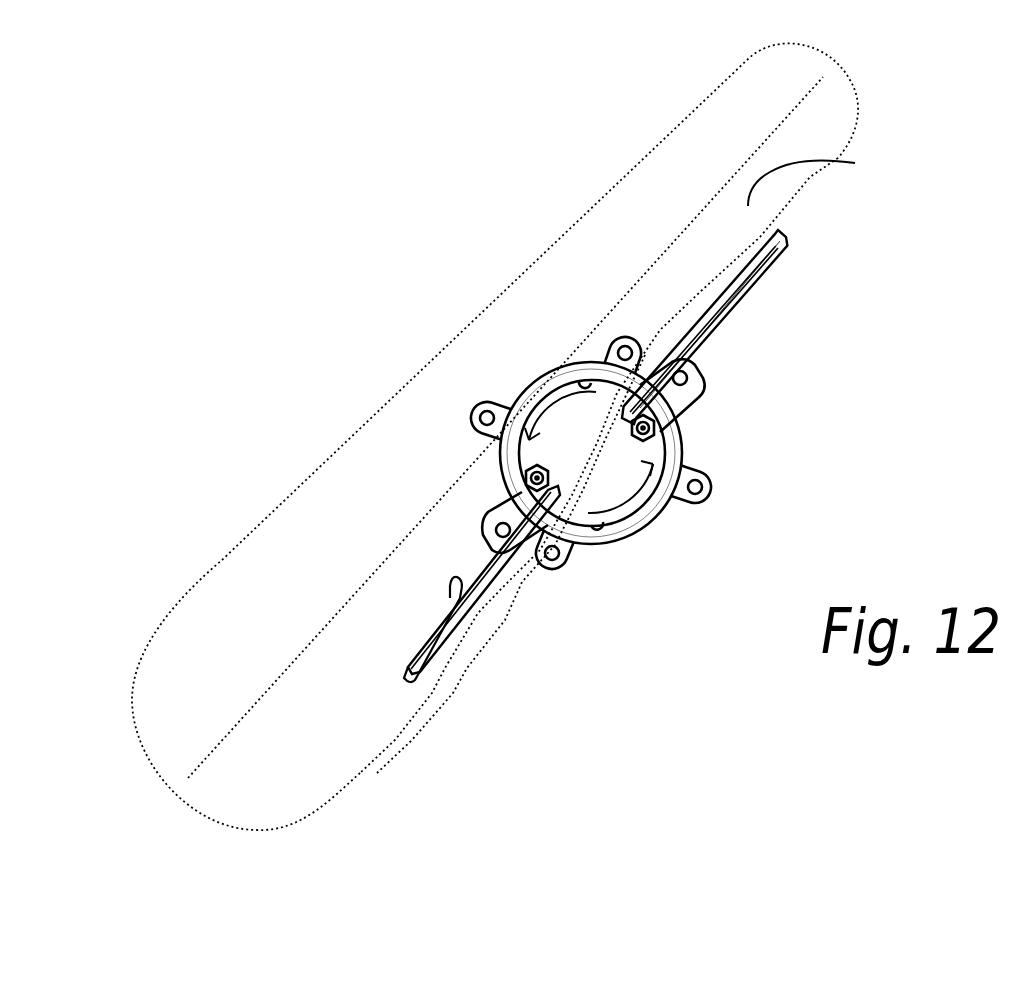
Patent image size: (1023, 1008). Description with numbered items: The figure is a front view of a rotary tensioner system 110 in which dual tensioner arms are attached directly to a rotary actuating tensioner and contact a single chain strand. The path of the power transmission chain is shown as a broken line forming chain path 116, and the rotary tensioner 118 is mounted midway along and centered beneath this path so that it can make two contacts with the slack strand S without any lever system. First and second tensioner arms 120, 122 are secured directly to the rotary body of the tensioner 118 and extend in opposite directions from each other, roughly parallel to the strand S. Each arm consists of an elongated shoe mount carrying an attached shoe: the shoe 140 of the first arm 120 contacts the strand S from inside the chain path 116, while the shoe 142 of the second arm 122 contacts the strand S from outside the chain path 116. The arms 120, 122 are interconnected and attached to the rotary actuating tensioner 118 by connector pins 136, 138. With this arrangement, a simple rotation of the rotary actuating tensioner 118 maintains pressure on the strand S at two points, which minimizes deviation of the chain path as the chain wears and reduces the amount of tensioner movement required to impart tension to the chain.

The wiper assembly 110 is at (622, 625).
The chain path 116 is at (668, 128).
The rotary actuating tensioner 118 is at (650, 532).
The first tensioner arm 120 is at (790, 248).
The second tensioner arm 122 is at (430, 638).
The connector pin 136 is at (683, 439).
The connector pin 138 is at (528, 462).
The shoe 140 is at (706, 316).
The shoe 142 is at (462, 638).
The strand S is at (403, 757).